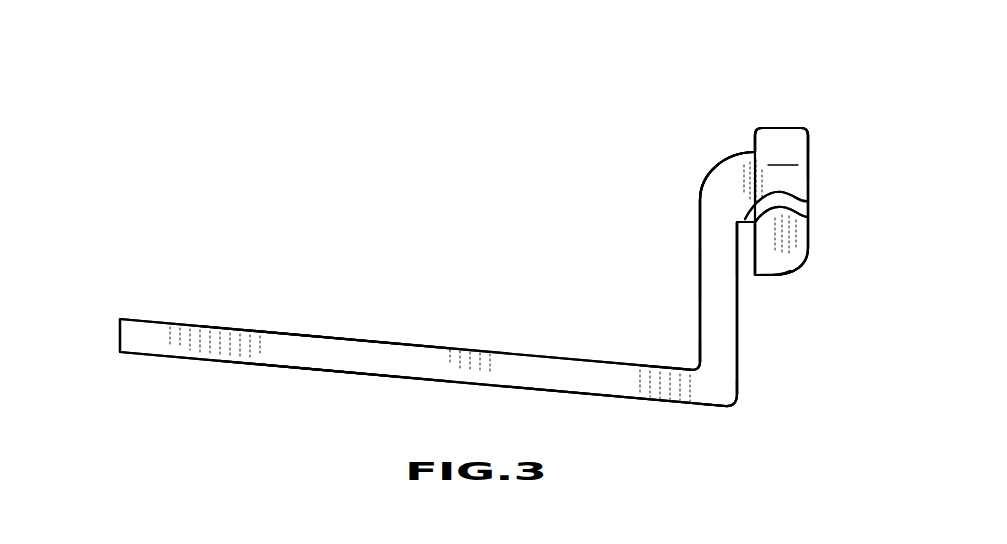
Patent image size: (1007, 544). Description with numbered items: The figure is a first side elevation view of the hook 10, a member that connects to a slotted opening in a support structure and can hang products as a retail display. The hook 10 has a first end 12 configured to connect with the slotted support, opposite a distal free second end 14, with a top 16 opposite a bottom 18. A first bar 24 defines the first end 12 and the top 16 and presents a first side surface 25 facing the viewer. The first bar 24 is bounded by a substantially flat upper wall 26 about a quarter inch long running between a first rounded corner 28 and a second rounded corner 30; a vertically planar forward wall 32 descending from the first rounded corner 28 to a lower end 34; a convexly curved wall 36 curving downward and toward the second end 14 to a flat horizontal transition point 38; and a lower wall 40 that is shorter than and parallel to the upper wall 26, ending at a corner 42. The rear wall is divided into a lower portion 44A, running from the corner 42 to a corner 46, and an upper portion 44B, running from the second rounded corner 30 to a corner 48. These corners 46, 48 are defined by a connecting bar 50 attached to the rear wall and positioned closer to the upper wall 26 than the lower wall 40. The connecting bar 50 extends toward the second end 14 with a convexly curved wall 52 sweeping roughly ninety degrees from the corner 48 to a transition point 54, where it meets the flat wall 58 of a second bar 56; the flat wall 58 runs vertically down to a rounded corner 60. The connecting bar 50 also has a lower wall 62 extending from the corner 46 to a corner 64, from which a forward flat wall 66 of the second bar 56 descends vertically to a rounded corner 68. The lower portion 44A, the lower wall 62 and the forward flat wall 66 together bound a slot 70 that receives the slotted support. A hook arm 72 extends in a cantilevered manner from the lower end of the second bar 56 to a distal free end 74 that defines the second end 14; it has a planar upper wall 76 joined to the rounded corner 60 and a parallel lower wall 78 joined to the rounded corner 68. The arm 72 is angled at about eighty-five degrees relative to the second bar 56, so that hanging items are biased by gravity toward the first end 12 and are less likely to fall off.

The hook 10 is at (386, 182).
The first end 12 is at (866, 345).
The second end 14 is at (80, 326).
The top 16 is at (466, 278).
The bottom 18 is at (634, 436).
The first bar 24 is at (808, 179).
The first side surface 25 is at (781, 164).
The upper wall 26 is at (784, 128).
The first rounded corner 28 is at (808, 132).
The second rounded corner 30 is at (754, 127).
The forward wall 32 is at (812, 153).
The lower end 34 is at (812, 243).
The convexly curved wall 36 is at (797, 260).
The transition point 38 is at (770, 277).
The lower wall 40 is at (763, 277).
The corner 42 is at (753, 278).
The lower portion of the rear wall 44A is at (748, 249).
The upper portion of the rear wall 44B is at (748, 136).
The corner 46 is at (812, 218).
The corner 48 is at (754, 152).
The connecting bar 50 is at (740, 197).
The convexly curved wall 52 is at (717, 173).
The transition point 54 is at (700, 202).
The second bar 56 is at (729, 331).
The flat wall 58 is at (697, 312).
The rounded corner 60 is at (690, 362).
The lower wall 62 is at (812, 200).
The corner 64 is at (737, 222).
The forward flat wall 66 is at (738, 360).
The rounded corner 68 is at (737, 402).
The slot 70 is at (748, 262).
The hook arm 72 is at (347, 336).
The distal free end 74 is at (120, 337).
The upper wall 76 is at (260, 330).
The lower wall 78 is at (288, 368).